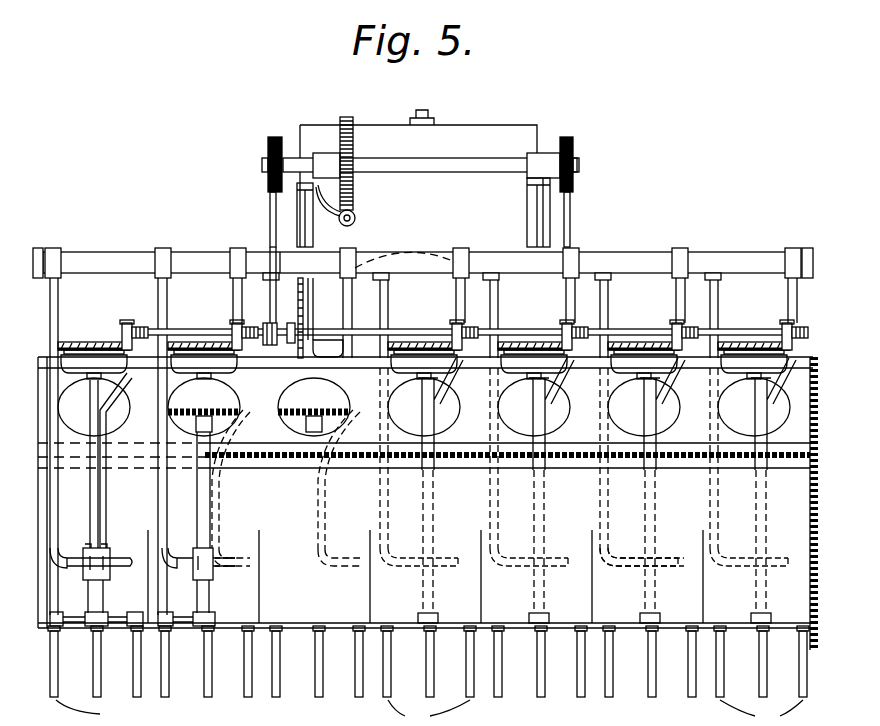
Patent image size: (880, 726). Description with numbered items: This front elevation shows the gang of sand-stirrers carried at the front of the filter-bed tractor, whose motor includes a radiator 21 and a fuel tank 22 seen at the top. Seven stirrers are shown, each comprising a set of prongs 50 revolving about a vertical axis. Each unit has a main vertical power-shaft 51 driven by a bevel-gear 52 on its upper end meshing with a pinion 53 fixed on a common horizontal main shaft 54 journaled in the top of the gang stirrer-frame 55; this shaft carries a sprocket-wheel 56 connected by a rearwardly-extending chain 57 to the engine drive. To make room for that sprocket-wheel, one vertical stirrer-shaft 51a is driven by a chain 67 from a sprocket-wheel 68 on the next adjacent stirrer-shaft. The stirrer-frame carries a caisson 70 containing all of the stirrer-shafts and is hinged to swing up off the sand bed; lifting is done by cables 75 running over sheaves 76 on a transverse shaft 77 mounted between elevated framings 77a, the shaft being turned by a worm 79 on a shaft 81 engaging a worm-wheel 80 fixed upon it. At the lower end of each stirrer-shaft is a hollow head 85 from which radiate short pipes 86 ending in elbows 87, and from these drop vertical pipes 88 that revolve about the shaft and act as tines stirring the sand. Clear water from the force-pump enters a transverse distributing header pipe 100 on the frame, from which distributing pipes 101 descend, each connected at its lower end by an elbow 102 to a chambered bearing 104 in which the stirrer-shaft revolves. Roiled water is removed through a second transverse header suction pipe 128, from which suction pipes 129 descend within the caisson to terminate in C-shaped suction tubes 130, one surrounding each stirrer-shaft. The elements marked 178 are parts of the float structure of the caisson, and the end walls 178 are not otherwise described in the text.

The fuel tank 22 is at (372, 130).
The sheaves 76 is at (268, 142).
The transverse shaft 77 is at (452, 158).
The cables 75 is at (270, 218).
The worm-wheel 80 is at (353, 195).
The worm 79 is at (356, 218).
The shaft 81 is at (340, 214).
The elevated framings 77a is at (313, 238).
The transverse distributing header pipe 100 is at (205, 252).
The chain 57 is at (303, 262).
The transverse header suction pipe 128 is at (110, 252).
The distributing pipes 101 is at (232, 288).
The suction pipes 129 is at (56, 290).
The bevel-gear 52 is at (110, 342).
The pinions 53 is at (126, 322).
The horizontal main shaft 54 is at (268, 324).
The gang stirrer-frame 55 is at (382, 376).
The main vertical power-shaft 51 is at (94, 410).
The sprocket-wheel 56 is at (306, 318).
The radiator 21 is at (405, 276).
The sprocket-wheel 68 is at (175, 418).
The chain 67 is at (258, 452).
The vertical stirrer-shaft 51a is at (328, 500).
The C-shaped suction tubes 130 is at (446, 558).
The chambered bearing 104 is at (108, 548).
The elbow 102 is at (112, 560).
The caisson 70 is at (233, 628).
The elbows 87 is at (60, 612).
The hollow head 85 is at (90, 628).
The short pipes 86 is at (105, 614).
The tube 178 is at (45, 650).
The vertical pipes 88 is at (360, 660).
The prongs 50 is at (429, 713).